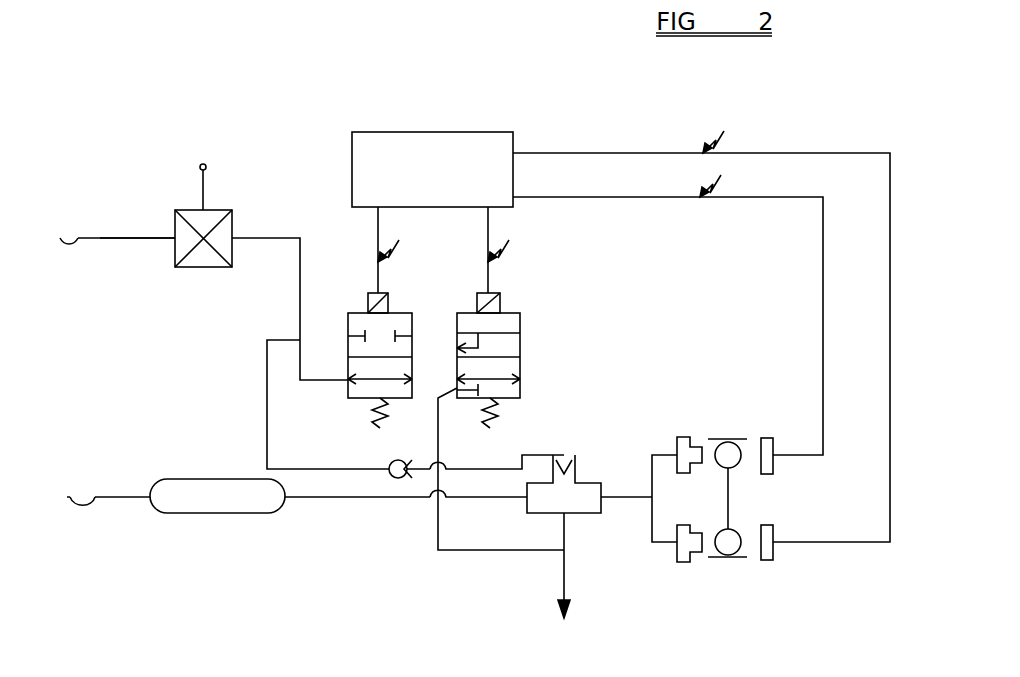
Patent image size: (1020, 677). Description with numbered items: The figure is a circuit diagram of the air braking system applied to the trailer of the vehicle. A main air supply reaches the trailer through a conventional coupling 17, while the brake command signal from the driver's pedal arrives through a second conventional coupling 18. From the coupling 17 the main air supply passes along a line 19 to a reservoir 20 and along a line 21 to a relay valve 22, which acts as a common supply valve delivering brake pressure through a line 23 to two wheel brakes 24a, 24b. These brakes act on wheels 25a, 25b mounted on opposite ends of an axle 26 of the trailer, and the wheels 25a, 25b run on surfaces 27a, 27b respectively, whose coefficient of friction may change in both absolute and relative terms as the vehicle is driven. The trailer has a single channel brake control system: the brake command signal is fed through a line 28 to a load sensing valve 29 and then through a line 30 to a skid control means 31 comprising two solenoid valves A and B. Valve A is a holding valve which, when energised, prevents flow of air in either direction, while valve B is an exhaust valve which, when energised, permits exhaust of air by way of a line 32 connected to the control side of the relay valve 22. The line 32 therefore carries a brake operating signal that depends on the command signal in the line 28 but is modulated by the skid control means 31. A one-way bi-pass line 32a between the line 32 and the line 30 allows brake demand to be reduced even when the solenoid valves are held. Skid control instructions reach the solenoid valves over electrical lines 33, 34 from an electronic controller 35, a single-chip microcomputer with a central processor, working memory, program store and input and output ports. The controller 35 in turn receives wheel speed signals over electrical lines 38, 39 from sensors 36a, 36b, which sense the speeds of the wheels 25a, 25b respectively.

The coupling 17 is at (86, 507).
The coupling 18 is at (69, 240).
The line 19 is at (130, 495).
The reservoir 20 is at (235, 513).
The line 21 is at (384, 498).
The relay valve 22 is at (527, 500).
The line 23 is at (626, 499).
The wheel brake 24a is at (682, 437).
The wheel brake 24b is at (683, 562).
The wheel 25a is at (716, 446).
The wheel 25b is at (714, 546).
The axle 26 is at (732, 510).
The surface 27a is at (740, 439).
The surface 27b is at (738, 560).
The line 28 is at (142, 240).
The load sensing valve 29 is at (232, 206).
The line 30 is at (271, 236).
The skid control means 31 is at (348, 408).
The line 32 is at (564, 386).
The one-way bi-pass line 32a is at (267, 400).
The electrical line 33 is at (378, 226).
The electrical line 34 is at (488, 228).
The electronic controller 35 is at (432, 169).
The sensor 36a is at (766, 438).
The sensor 36b is at (774, 560).
The electrical line 38 is at (823, 229).
The electrical line 39 is at (890, 260).